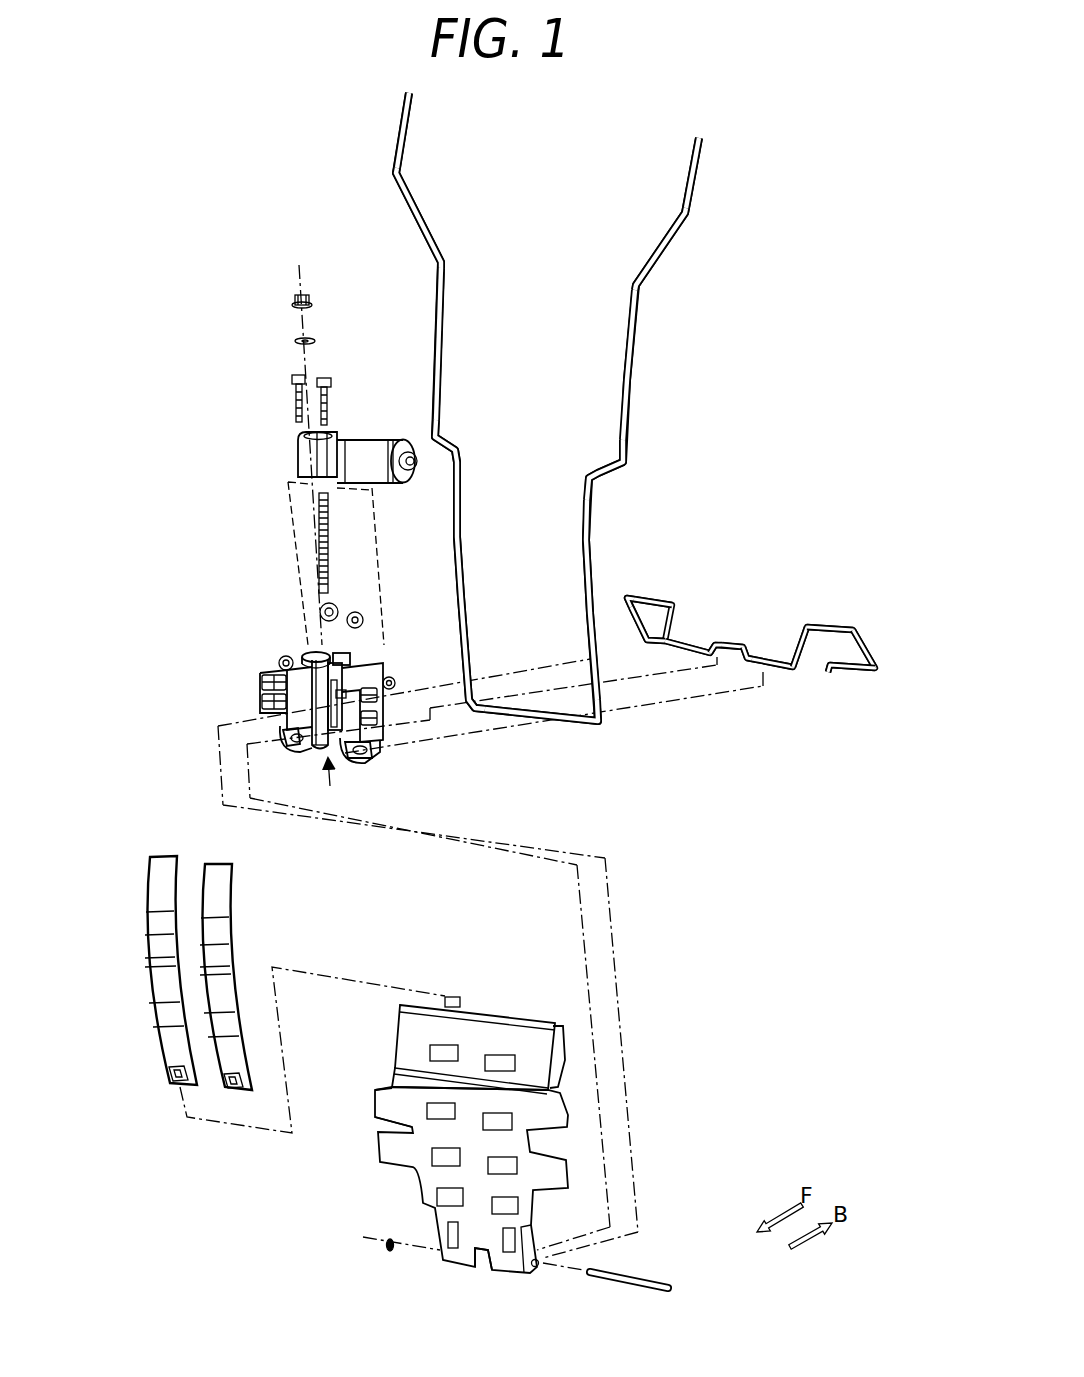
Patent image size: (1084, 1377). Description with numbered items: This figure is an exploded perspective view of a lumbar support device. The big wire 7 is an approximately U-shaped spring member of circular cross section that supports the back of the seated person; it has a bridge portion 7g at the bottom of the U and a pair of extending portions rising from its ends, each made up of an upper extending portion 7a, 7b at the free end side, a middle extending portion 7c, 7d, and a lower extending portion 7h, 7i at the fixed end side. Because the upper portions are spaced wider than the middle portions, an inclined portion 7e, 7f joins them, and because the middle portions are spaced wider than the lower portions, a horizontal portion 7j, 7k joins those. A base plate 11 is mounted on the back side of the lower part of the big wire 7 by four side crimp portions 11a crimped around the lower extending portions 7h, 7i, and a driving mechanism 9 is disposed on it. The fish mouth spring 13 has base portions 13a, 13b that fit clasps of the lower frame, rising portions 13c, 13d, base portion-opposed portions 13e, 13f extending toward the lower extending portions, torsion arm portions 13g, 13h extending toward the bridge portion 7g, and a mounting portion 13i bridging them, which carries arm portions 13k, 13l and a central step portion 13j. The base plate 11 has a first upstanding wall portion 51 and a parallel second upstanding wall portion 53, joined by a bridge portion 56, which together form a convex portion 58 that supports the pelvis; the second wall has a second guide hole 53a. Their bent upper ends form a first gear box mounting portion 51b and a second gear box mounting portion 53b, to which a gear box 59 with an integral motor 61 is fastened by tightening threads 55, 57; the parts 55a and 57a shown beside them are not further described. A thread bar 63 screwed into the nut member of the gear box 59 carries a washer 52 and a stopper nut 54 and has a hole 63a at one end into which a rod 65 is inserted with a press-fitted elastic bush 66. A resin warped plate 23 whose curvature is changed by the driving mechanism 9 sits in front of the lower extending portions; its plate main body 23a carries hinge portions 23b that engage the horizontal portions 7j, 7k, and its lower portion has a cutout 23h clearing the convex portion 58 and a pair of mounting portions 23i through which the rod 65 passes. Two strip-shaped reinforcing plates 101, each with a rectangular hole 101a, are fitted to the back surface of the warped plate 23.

The big wire 7 is at (647, 410).
The upper extending portion 7a is at (406, 143).
The upper extending portion 7b is at (694, 180).
The middle extending portion 7c is at (442, 335).
The middle extending portion 7d is at (632, 338).
The inclined portion 7e is at (417, 208).
The inclined portion 7f is at (660, 261).
The bridge portion 7g is at (572, 725).
The lower extending portion 7h is at (464, 573).
The lower extending portion 7i is at (599, 567).
The horizontal portion 7j is at (449, 445).
The horizontal portion 7k is at (603, 478).
The driving mechanism 9 is at (319, 455).
The base plate 11 is at (314, 716).
The side crimp portions 11a is at (400, 670).
The fish mouth spring 13 is at (774, 598).
The base portion 13a is at (652, 641).
The base portion 13b is at (856, 670).
The rising portion 13c is at (633, 597).
The rising portion 13d is at (865, 650).
The base portion-opposed portion 13e is at (658, 598).
The base portion-opposed portion 13f is at (831, 628).
The torsion arm portion 13g is at (668, 638).
The torsion arm portion 13h is at (804, 625).
The mounting portion 13i is at (778, 670).
The step portion 13j is at (733, 645).
The arm portion 13k is at (717, 656).
The arm portion 13l is at (745, 660).
The warped plate 23 is at (471, 1137).
The plate main body 23a is at (378, 1091).
The hinge portion 23b is at (425, 1002).
The cutout 23h is at (486, 1257).
The mounting portions 23i is at (535, 1267).
The first upstanding wall portion 51 is at (291, 664).
The first gear box mounting portion 51b is at (309, 650).
The washer 52 is at (313, 340).
The second upstanding wall portion 53 is at (379, 657).
The second guide hole 53a is at (342, 690).
The second gear box mounting portion 53b is at (348, 655).
The stopper nut 54 is at (311, 296).
The tightening thread 55 is at (294, 396).
The nut 55a is at (279, 660).
The bridge portion 56 is at (318, 748).
The tightening thread 57 is at (331, 388).
The nut 57a is at (397, 689).
The convex portion 58 is at (333, 785).
The gear box 59 is at (303, 453).
The motor 61 is at (377, 443).
The thread bar 63 is at (317, 518).
The hole 63a is at (334, 606).
The rod 65 is at (632, 1282).
The elastic bush 66 is at (358, 614).
The reinforcing plate 101 is at (179, 990).
The rectangular hole 101a is at (170, 1072).